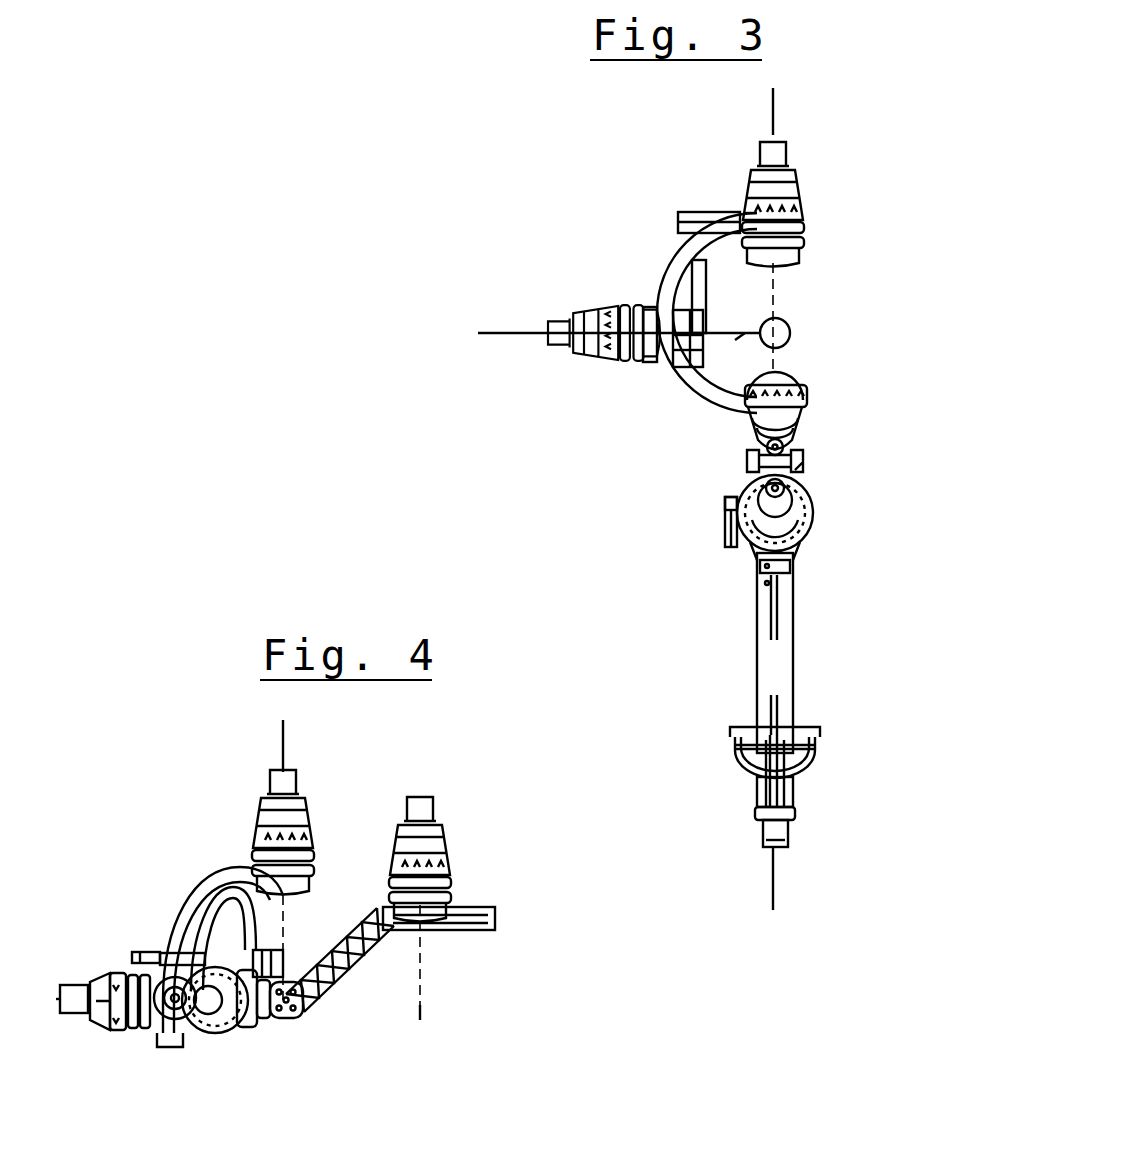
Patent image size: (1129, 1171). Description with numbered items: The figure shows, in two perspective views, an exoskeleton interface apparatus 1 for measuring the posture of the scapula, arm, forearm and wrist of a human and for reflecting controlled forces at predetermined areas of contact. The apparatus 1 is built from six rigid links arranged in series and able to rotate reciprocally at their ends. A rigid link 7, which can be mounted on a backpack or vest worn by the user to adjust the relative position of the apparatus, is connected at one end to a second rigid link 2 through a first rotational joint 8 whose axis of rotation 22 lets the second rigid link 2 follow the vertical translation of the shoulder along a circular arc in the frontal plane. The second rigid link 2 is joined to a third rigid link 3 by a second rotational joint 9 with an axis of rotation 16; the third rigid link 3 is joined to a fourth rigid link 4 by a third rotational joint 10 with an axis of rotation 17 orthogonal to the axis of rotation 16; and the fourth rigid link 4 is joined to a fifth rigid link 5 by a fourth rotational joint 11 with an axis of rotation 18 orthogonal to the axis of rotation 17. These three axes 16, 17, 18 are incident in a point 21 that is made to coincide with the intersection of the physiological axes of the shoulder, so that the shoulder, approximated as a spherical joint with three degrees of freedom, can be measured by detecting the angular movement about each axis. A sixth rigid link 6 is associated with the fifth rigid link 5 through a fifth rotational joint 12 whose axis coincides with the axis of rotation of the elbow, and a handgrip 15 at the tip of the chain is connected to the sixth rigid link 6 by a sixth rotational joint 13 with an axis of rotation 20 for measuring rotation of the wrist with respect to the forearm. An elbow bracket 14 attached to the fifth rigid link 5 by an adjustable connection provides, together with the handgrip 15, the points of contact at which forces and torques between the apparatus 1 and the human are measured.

In FIG. 3, the exoskeleton interface apparatus 1 is at (478, 223).
In FIG. 4, the exoskeleton interface apparatus 1 is at (367, 1063).
In FIG. 3, the second rigid link 2 is at (688, 215).
In FIG. 4, the second rigid link 2 is at (435, 925).
In FIG. 3, the third rigid link 3 is at (680, 248).
In FIG. 4, the third rigid link 3 is at (235, 910).
In FIG. 3, the fourth rigid link 4 is at (680, 382).
In FIG. 4, the fourth rigid link 4 is at (178, 918).
In FIG. 3, the fifth rigid link 5 is at (765, 462).
In FIG. 3, the sixth rigid link 6 is at (775, 663).
In FIG. 3, the rigid link 7 is at (702, 322).
In FIG. 4, the first rotational joint 8 is at (435, 850).
In FIG. 3, the second rotational joint 9 is at (790, 205).
In FIG. 4, the second rotational joint 9 is at (228, 1030).
In FIG. 3, the third rotational joint 10 is at (600, 318).
In FIG. 4, the third rotational joint 10 is at (265, 825).
In FIG. 3, the fourth rotational joint 11 is at (790, 410).
In FIG. 4, the fourth rotational joint 11 is at (115, 1015).
In FIG. 3, the fifth rotational joint 12 is at (808, 522).
In FIG. 3, the sixth rotational joint 13 is at (790, 787).
In FIG. 3, the elbow bracket 14 is at (725, 522).
In FIG. 4, the elbow bracket 14 is at (148, 955).
In FIG. 3, the handgrip 15 is at (813, 730).
In FIG. 3, the axis of rotation 16 is at (773, 107).
In FIG. 3, the axis of rotation 17 is at (523, 334).
In FIG. 4, the axis of rotation 17 is at (283, 735).
In FIG. 3, the axis of rotation 18 is at (780, 357).
In FIG. 3, the axis of rotation 20 is at (773, 887).
In FIG. 3, the intersection point 21 is at (790, 323).
In FIG. 3, the axis of rotation 22 is at (735, 340).
In FIG. 4, the axis of rotation 22 is at (422, 1012).